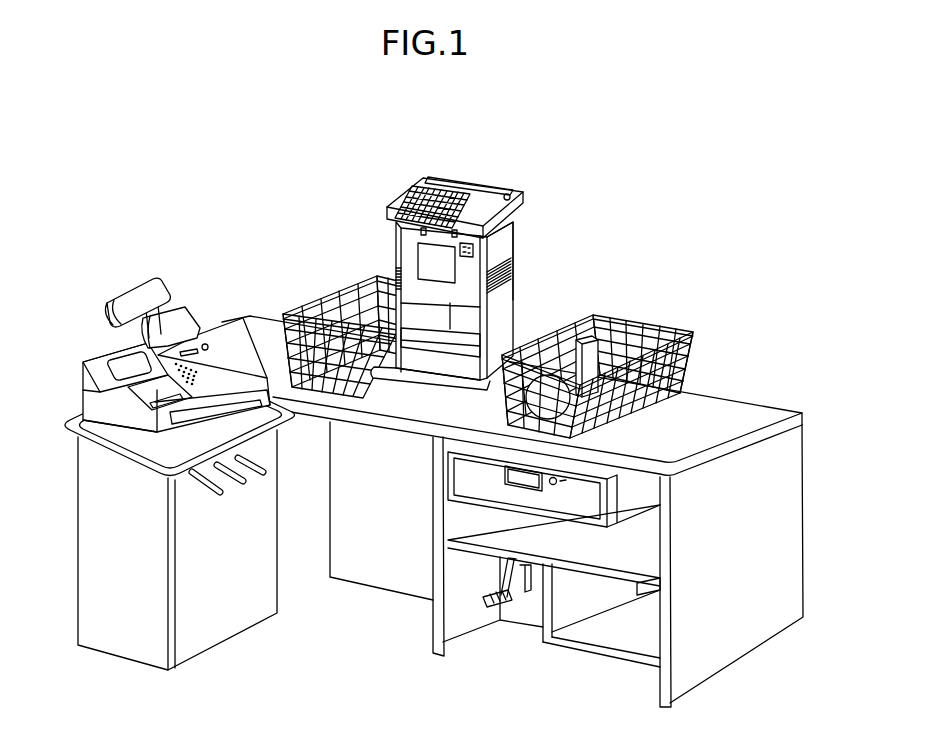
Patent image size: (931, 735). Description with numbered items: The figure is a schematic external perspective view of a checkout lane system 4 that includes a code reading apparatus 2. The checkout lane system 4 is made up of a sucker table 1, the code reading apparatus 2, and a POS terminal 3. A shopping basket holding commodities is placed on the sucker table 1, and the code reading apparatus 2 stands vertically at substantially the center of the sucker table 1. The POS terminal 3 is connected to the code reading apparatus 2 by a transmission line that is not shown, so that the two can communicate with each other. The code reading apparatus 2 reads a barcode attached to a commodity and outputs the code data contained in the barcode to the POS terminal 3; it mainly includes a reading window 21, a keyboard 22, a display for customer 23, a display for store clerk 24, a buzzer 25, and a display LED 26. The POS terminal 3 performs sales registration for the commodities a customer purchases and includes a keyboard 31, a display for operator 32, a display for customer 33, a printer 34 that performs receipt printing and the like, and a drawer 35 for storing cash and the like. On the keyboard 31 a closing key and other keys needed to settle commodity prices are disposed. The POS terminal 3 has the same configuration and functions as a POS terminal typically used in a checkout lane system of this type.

The sucker table 1 is at (792, 447).
The code reading apparatus 2 is at (516, 232).
The POS terminal 3 is at (80, 385).
The checkout lane system 4 is at (656, 145).
The reading window 21 is at (428, 256).
The keyboard 22 is at (394, 202).
The display for customer 23 is at (527, 217).
The display for store clerk 24 is at (449, 178).
The buzzer 25 is at (472, 252).
The display LED 26 is at (508, 193).
The keyboard 31 is at (232, 364).
The display for operator 32 is at (186, 325).
The display for customer 33 is at (150, 280).
The printer 34 is at (150, 392).
The drawer 35 is at (193, 433).